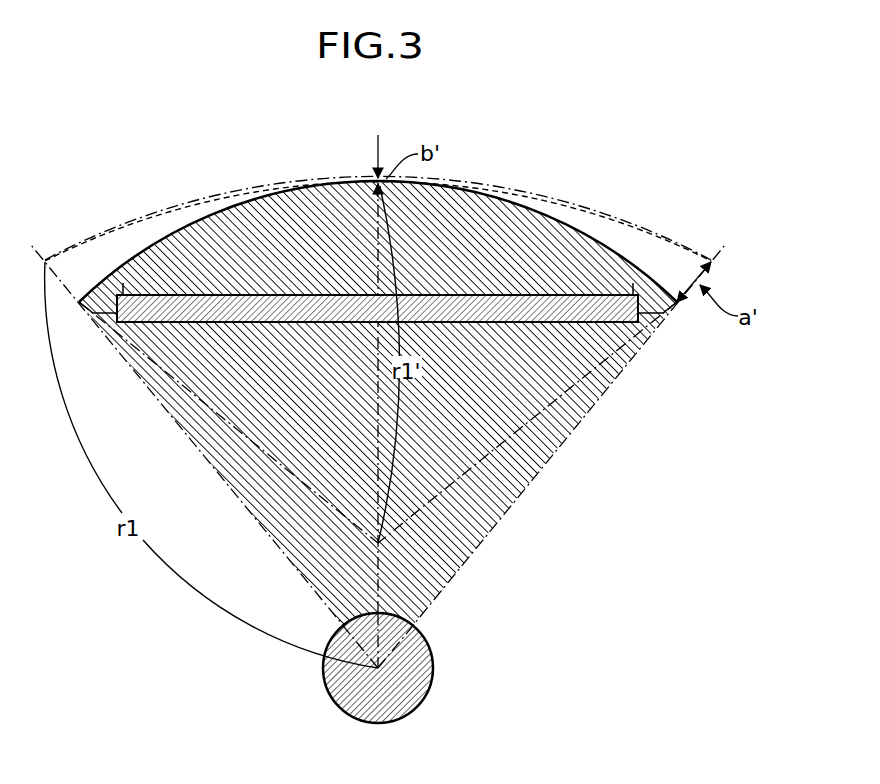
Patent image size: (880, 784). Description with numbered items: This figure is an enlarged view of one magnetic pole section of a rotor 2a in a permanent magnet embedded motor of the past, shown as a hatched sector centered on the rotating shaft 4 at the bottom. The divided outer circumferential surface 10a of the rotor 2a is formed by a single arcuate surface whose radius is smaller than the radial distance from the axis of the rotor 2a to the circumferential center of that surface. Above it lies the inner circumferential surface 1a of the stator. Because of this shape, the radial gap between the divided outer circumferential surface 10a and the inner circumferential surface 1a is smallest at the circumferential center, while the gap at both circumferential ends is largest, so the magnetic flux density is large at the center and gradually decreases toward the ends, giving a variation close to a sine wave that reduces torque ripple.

The rotor 2a is at (447, 222).
The divided outer circumferential surface 10a is at (552, 214).
The inner circumferential surface 1a is at (615, 208).
The rotating shaft 4 is at (427, 672).